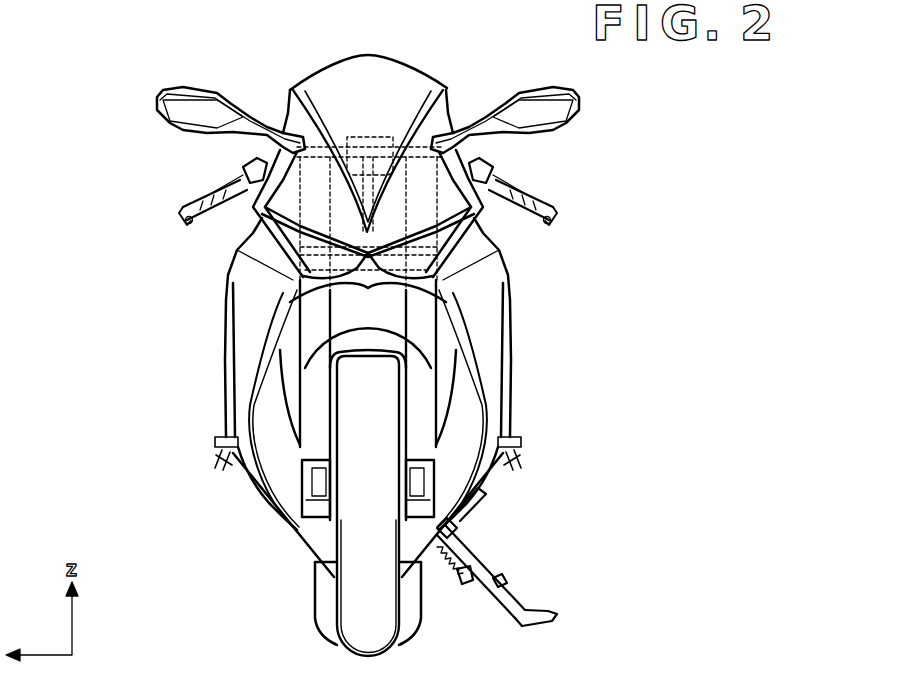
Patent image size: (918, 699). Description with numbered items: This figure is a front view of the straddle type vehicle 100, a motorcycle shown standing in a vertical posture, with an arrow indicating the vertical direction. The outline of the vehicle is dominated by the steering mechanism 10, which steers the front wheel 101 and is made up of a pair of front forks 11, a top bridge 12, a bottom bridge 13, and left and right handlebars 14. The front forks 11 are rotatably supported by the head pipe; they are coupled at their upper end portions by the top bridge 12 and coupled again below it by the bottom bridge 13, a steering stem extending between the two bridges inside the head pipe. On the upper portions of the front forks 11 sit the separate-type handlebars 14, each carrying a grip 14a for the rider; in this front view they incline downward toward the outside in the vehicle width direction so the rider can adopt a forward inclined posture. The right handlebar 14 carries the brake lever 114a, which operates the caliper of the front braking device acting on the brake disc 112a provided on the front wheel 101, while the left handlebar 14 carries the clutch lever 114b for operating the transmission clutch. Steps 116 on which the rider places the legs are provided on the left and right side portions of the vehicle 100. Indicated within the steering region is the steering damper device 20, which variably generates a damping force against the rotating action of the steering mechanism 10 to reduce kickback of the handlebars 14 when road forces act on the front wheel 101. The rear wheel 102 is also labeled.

The straddle type vehicle 100 is at (250, 63).
The steering mechanism 10 is at (370, 124).
The top bridge 12 is at (345, 112).
The steering damper device 20 is at (382, 135).
The bottom bridge 13 is at (452, 270).
The front forks 11 is at (300, 333).
The handlebars 14 is at (185, 201).
The grip 14a is at (180, 208).
The brake lever 114a is at (193, 227).
The clutch lever 114b is at (549, 210).
The steps 116 is at (217, 445).
The brake disc 112a is at (320, 570).
The rear wheel 102 is at (320, 631).
The front wheel 101 is at (398, 648).